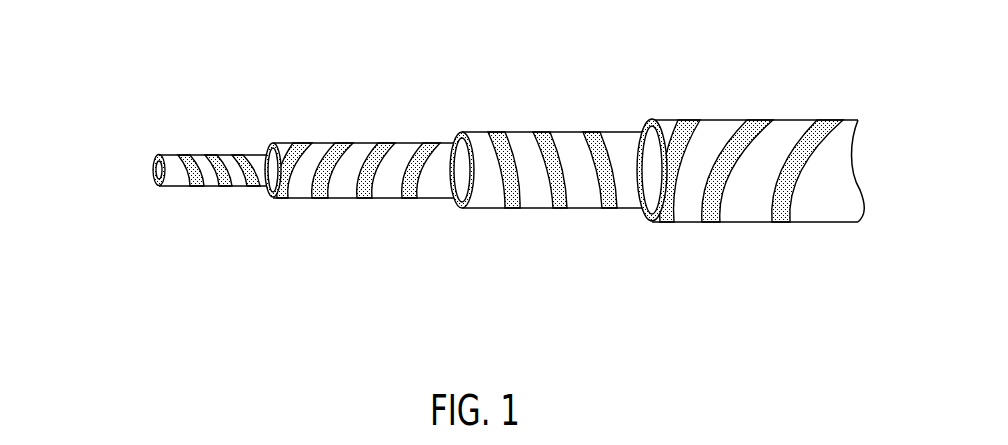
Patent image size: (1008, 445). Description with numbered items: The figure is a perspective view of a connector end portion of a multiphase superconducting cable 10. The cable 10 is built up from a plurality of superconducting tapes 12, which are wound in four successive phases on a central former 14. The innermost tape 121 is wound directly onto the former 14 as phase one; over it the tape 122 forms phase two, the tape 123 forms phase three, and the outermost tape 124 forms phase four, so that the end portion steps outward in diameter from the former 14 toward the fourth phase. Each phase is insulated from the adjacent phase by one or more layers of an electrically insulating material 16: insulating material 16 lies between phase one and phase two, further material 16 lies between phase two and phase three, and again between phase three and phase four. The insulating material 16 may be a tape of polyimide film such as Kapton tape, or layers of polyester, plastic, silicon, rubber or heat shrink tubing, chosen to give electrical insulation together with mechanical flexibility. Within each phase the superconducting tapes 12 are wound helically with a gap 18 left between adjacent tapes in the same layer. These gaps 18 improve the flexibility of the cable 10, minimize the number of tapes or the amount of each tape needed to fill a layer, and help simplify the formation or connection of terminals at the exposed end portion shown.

The multiphase superconducting cable 10 is at (118, 121).
The superconducting tapes 12 is at (865, 321).
The superconducting tape of phase 1 121 is at (265, 137).
The superconducting tape of phase 2 122 is at (452, 127).
The superconducting tape of phase 3 123 is at (638, 114).
The superconducting tape of phase 4 124 is at (858, 102).
The former 14 is at (157, 174).
The electrically insulating material 16 is at (272, 194).
The gap 18 is at (198, 186).